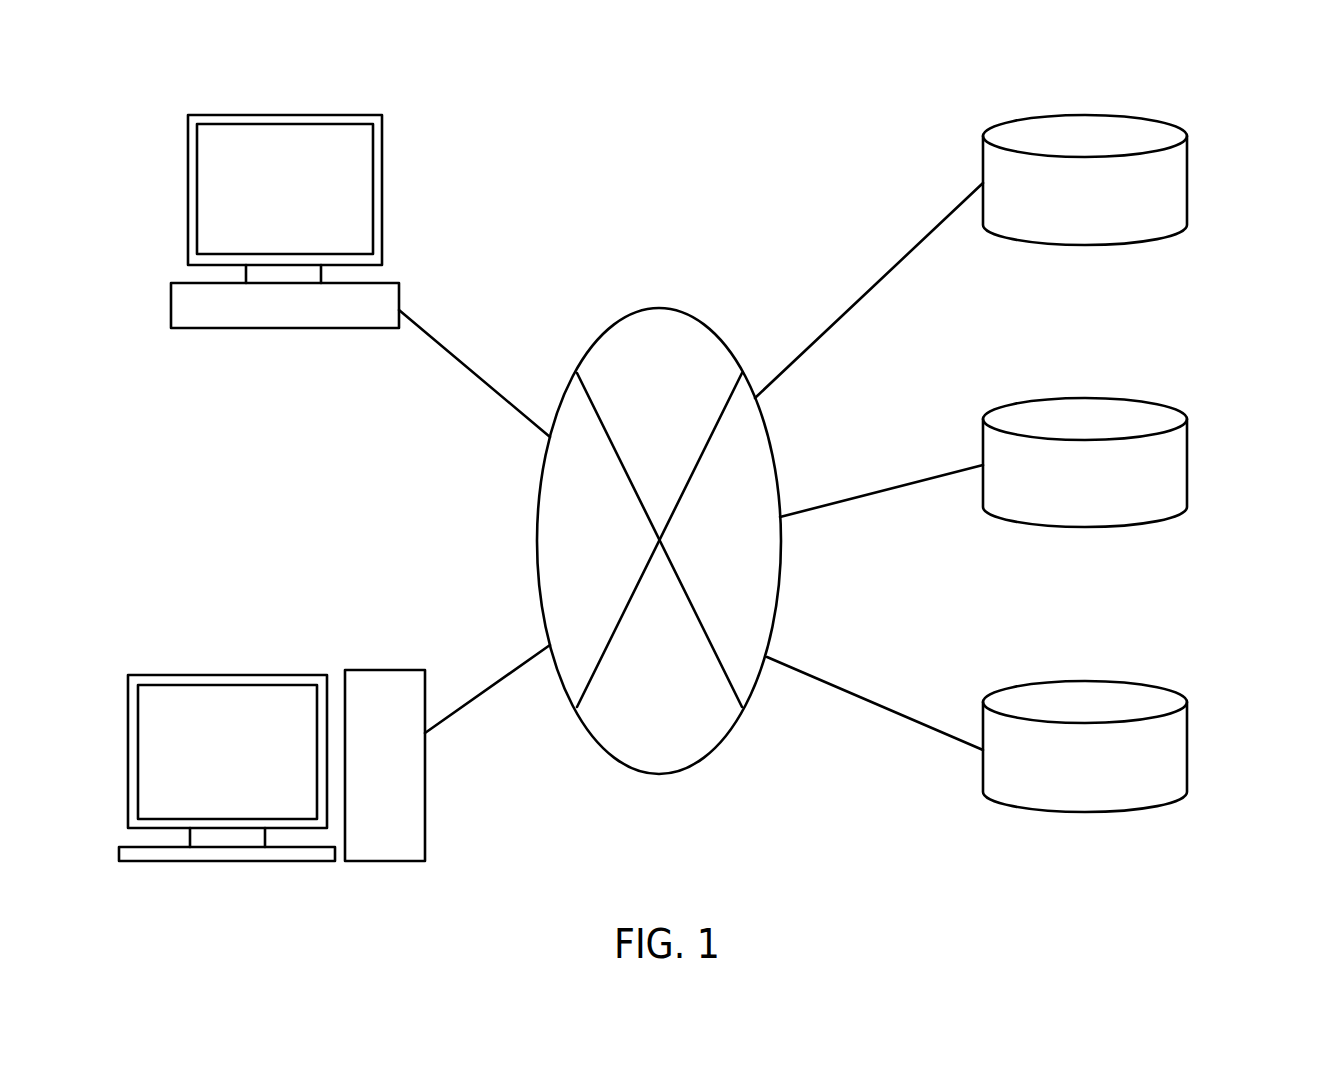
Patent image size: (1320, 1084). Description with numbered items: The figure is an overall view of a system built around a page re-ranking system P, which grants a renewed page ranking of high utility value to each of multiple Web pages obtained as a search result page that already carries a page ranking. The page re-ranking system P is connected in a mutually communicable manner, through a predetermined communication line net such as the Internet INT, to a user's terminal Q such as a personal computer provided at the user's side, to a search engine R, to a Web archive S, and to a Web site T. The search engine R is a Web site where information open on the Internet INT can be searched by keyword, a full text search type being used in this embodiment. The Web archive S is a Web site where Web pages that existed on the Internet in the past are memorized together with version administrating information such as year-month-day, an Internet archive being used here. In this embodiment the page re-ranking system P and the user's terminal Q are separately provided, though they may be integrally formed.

The user's terminal Q is at (236, 114).
The page re-ranking system P is at (168, 673).
The Internet INT is at (676, 309).
The search engine R is at (1038, 118).
The Web archive S is at (1036, 399).
The Web site T is at (1036, 683).